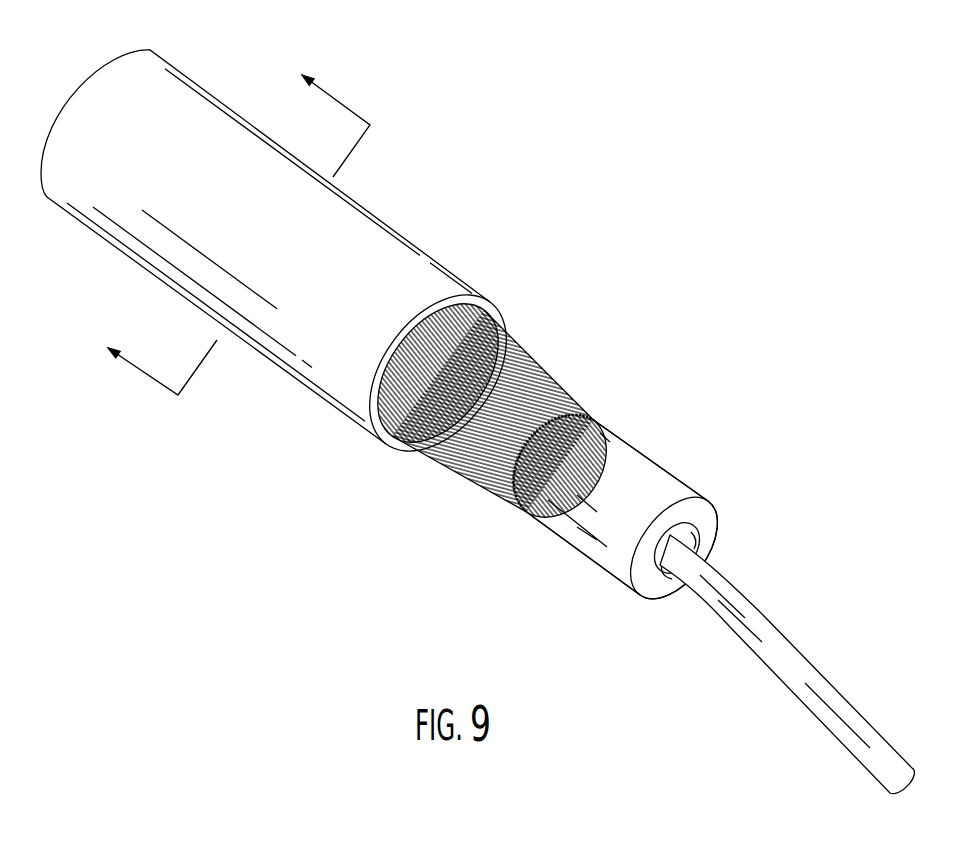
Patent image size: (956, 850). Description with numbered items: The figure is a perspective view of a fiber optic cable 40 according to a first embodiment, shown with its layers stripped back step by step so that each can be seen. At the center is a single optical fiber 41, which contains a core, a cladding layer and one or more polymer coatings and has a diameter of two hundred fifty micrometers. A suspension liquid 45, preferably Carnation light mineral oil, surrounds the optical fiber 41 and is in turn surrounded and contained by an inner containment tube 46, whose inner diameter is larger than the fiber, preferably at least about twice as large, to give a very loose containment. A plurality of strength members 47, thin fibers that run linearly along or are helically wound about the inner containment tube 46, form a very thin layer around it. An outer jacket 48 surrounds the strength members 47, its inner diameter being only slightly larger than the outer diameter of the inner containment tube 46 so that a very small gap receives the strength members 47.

The fiber optic cable 40 is at (479, 419).
The optical fiber 41 is at (840, 692).
The suspension liquid 45 is at (710, 558).
The inner containment tube 46 is at (663, 470).
The strength members 47 is at (537, 365).
The outer jacket 48 is at (299, 262).